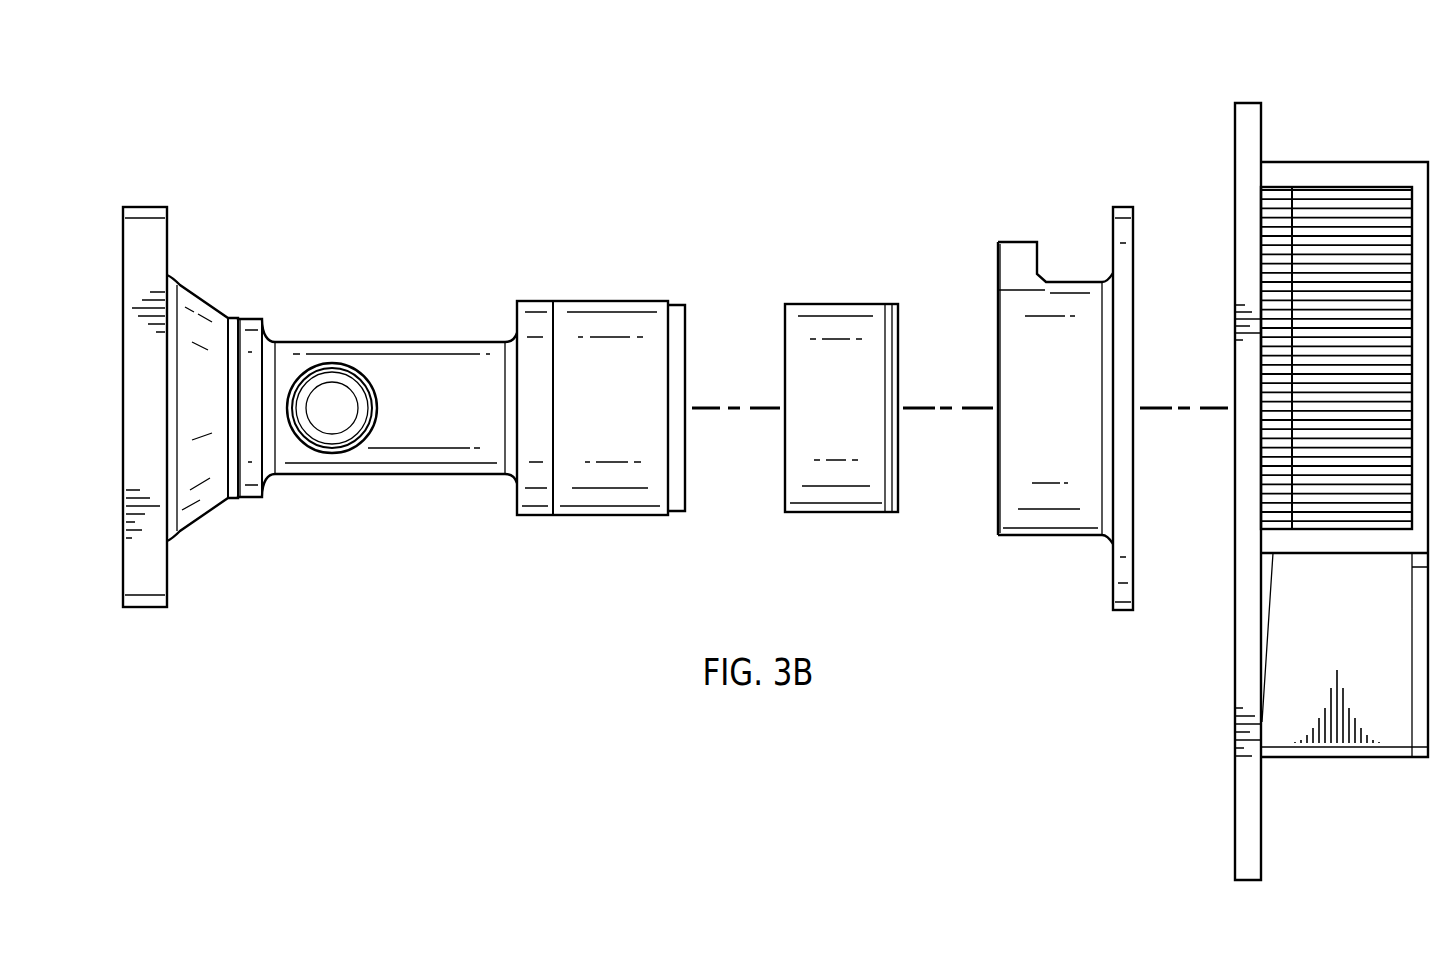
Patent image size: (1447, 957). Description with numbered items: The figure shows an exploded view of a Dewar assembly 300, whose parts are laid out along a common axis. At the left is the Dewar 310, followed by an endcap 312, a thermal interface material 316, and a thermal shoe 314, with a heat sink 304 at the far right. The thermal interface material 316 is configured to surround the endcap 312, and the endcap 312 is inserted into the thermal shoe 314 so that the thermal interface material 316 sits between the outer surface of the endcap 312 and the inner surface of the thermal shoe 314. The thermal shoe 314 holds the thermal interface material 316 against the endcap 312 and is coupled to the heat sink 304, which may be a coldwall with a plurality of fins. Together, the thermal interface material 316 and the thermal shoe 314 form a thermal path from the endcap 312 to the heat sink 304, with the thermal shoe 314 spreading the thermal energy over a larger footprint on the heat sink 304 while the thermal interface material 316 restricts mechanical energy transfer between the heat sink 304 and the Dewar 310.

The Dewar assembly 300 is at (392, 97).
The heat sink 304 is at (1342, 160).
The Dewar 310 is at (392, 342).
The endcap 312 is at (590, 300).
The thermal shoe 314 is at (1067, 280).
The thermal interface material 316 is at (833, 303).